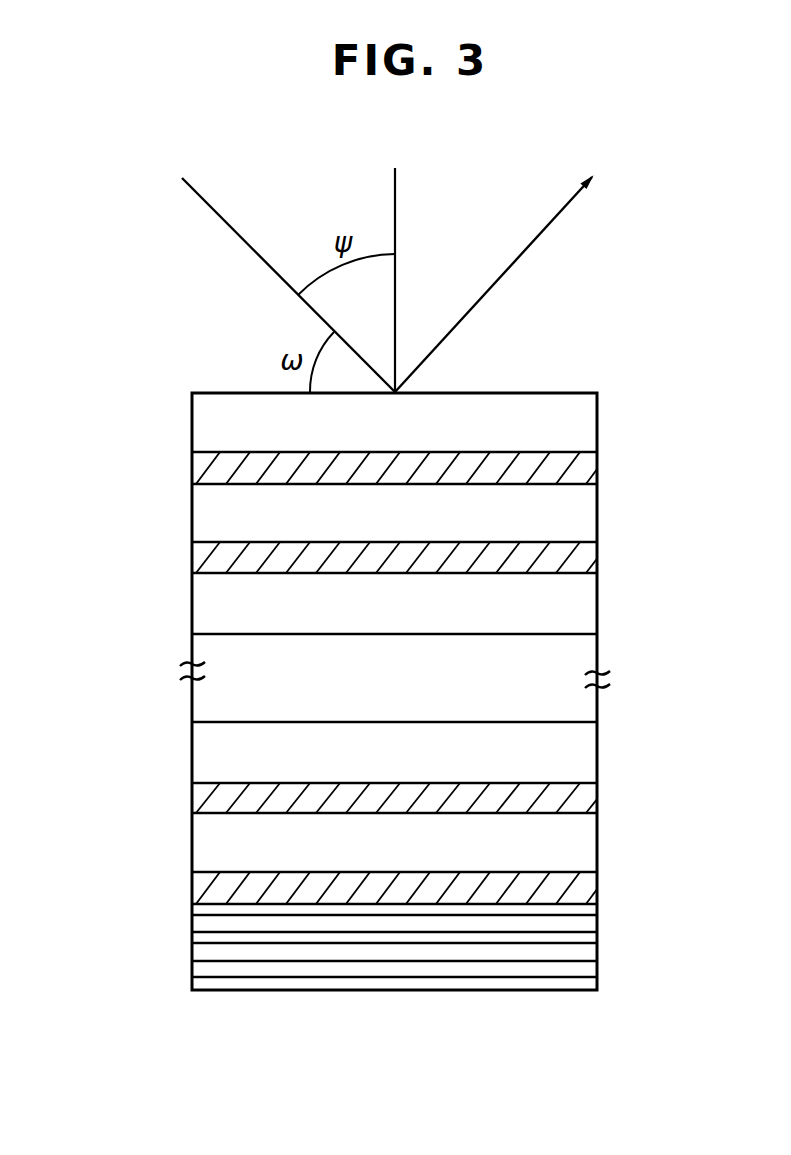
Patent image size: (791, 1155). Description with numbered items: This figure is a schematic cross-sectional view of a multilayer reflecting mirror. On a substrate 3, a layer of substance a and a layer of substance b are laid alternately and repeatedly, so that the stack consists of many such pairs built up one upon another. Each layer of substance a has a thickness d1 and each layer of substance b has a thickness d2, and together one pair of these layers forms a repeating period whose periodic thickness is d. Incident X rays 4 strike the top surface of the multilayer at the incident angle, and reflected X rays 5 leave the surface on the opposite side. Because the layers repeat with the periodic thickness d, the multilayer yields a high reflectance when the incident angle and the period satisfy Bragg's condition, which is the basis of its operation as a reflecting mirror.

The substrate 3 is at (603, 945).
The incident X rays 4 is at (227, 227).
The reflected X rays 5 is at (542, 233).
The layer of substance a is at (605, 421).
The layer of substance b is at (605, 467).
The periodic thickness d is at (80, 393).
The thickness of the layer of substance a d1 is at (163, 366).
The thickness of the layer of substance b d2 is at (115, 420).